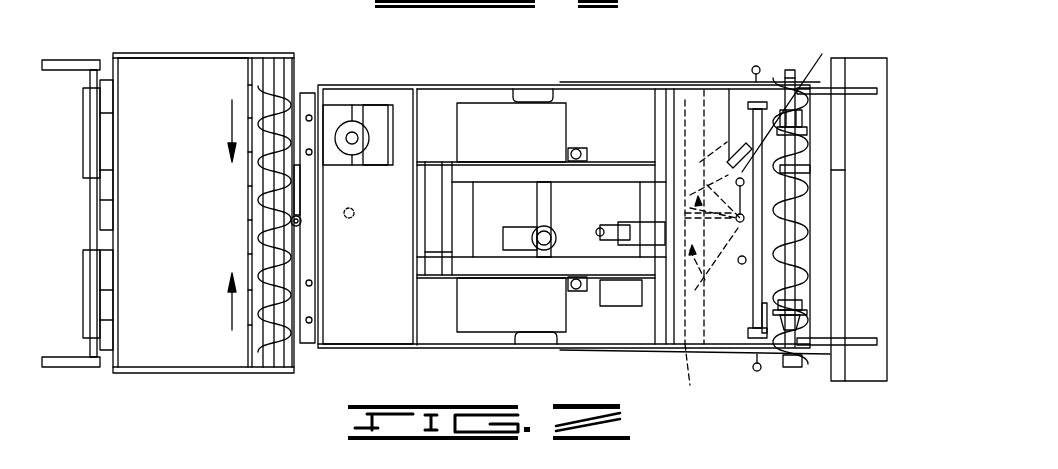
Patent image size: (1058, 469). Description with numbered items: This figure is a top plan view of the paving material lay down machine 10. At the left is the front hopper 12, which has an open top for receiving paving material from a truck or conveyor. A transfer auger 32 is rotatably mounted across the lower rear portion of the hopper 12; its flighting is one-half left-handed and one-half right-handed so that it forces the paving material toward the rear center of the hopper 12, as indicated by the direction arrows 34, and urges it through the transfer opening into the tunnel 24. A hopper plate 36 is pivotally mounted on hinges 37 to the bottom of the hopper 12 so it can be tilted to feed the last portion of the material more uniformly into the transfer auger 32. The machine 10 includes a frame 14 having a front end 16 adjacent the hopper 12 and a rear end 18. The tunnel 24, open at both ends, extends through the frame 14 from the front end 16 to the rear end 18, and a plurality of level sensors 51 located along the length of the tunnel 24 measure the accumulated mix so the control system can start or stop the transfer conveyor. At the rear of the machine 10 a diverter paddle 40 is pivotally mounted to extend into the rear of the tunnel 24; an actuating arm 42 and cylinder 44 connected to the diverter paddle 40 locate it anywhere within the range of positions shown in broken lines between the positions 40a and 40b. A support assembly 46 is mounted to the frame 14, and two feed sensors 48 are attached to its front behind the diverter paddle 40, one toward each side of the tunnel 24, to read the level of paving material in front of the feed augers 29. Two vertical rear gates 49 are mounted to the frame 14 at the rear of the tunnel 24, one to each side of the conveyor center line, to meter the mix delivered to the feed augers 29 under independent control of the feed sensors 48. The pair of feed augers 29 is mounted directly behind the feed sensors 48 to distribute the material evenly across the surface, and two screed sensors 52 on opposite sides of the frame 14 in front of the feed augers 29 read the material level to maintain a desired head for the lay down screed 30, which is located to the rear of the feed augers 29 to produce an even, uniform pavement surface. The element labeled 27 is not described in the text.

The paving material lay down machine 10 is at (330, 78).
The front hopper 12 is at (223, 52).
The frame 14 is at (460, 101).
The front end 16 is at (290, 88).
The rear end 18 is at (728, 107).
The tunnel 24 is at (685, 375).
The motor mount 27 is at (352, 110).
The feed augers 29 is at (785, 160).
The lay down screed 30 is at (863, 232).
The transfer auger 32 is at (272, 315).
The direction arrows 34 is at (230, 125).
The hopper plate 36 is at (162, 80).
The hinges 37 is at (251, 313).
The diverter paddle 40 is at (685, 100).
The diverter paddle position 40a is at (704, 90).
The diverter paddle position 40b is at (704, 344).
The actuating arm 42 is at (782, 183).
The cylinder 44 is at (740, 178).
The support assembly 46 is at (795, 150).
The feed sensors 48 is at (800, 80).
The rear gates 49 is at (675, 160).
The level sensors 51 is at (543, 213).
The screed sensors 52 is at (758, 66).